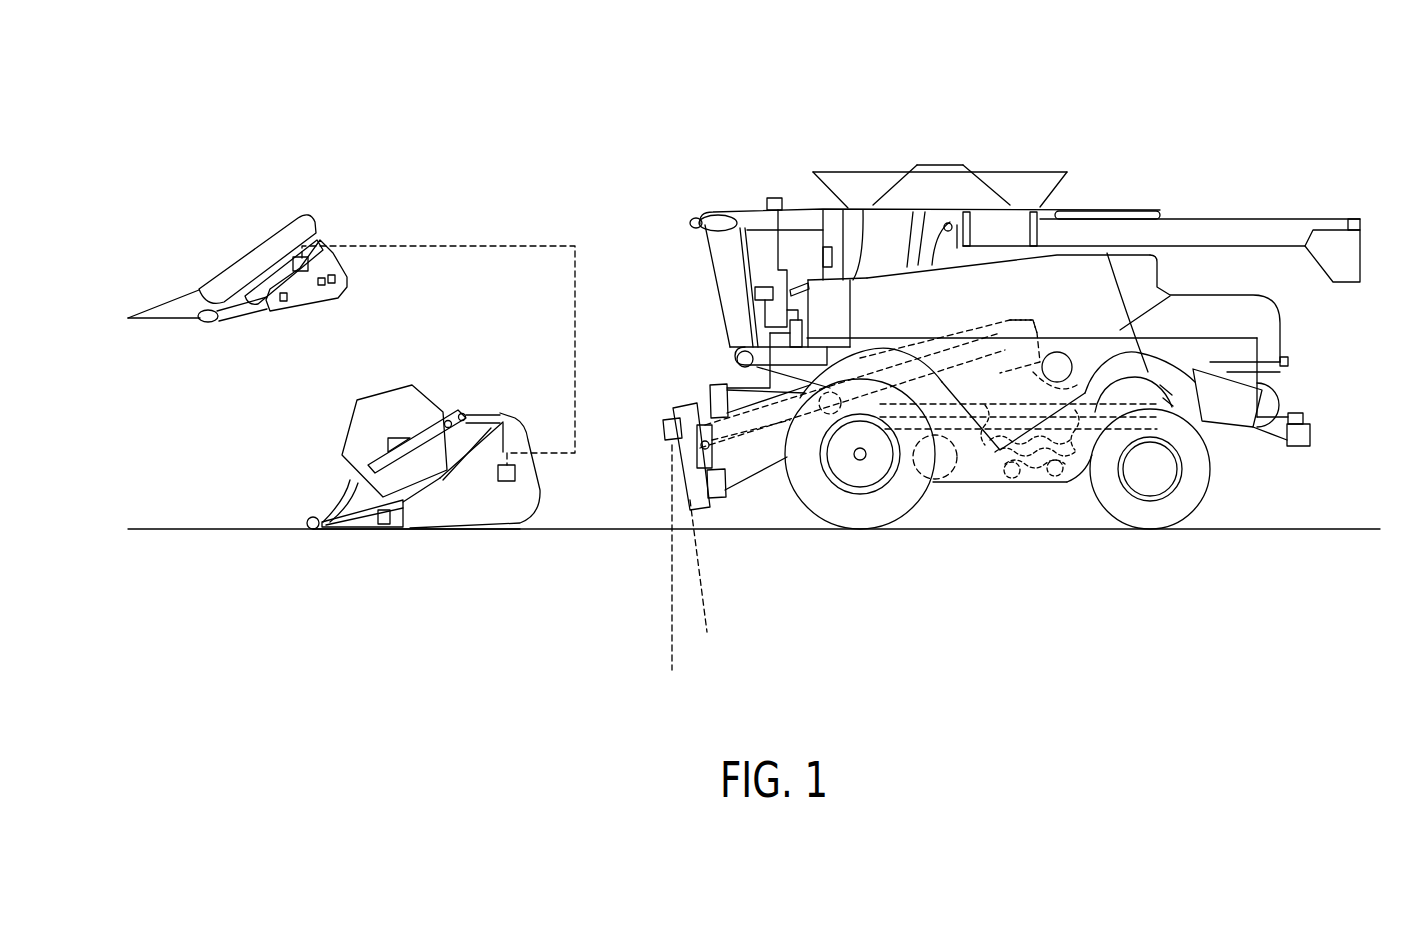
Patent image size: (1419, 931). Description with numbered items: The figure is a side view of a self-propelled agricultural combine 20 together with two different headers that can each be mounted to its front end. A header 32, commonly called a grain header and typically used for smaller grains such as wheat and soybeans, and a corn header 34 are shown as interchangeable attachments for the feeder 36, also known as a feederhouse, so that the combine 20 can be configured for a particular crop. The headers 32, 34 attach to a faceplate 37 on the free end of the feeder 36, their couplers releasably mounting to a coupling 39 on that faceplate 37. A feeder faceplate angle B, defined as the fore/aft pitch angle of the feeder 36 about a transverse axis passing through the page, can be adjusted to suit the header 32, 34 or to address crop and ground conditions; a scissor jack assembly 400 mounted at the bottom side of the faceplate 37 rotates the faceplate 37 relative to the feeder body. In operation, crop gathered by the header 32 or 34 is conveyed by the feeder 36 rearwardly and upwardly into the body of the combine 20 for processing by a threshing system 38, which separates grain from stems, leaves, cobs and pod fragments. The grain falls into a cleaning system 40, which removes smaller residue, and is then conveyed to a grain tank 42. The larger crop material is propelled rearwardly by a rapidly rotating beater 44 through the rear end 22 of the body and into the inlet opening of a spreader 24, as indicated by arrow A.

The self-propelled agricultural combine 20 is at (1162, 105).
The rear end 22 is at (1285, 338).
The spreader 24 is at (1300, 388).
The header 32 is at (337, 417).
The corn header 34 is at (232, 231).
The feeder 36 is at (754, 472).
The faceplate 37 is at (690, 473).
The threshing system 38 is at (1012, 318).
The coupling 39 is at (667, 430).
The cleaning system 40 is at (1000, 450).
The grain tank 42 is at (1023, 167).
The beater 44 is at (1058, 352).
The scissor jack assembly 400 is at (717, 495).
The arrow A is at (1200, 372).
The feeder faceplate angle B is at (745, 610).